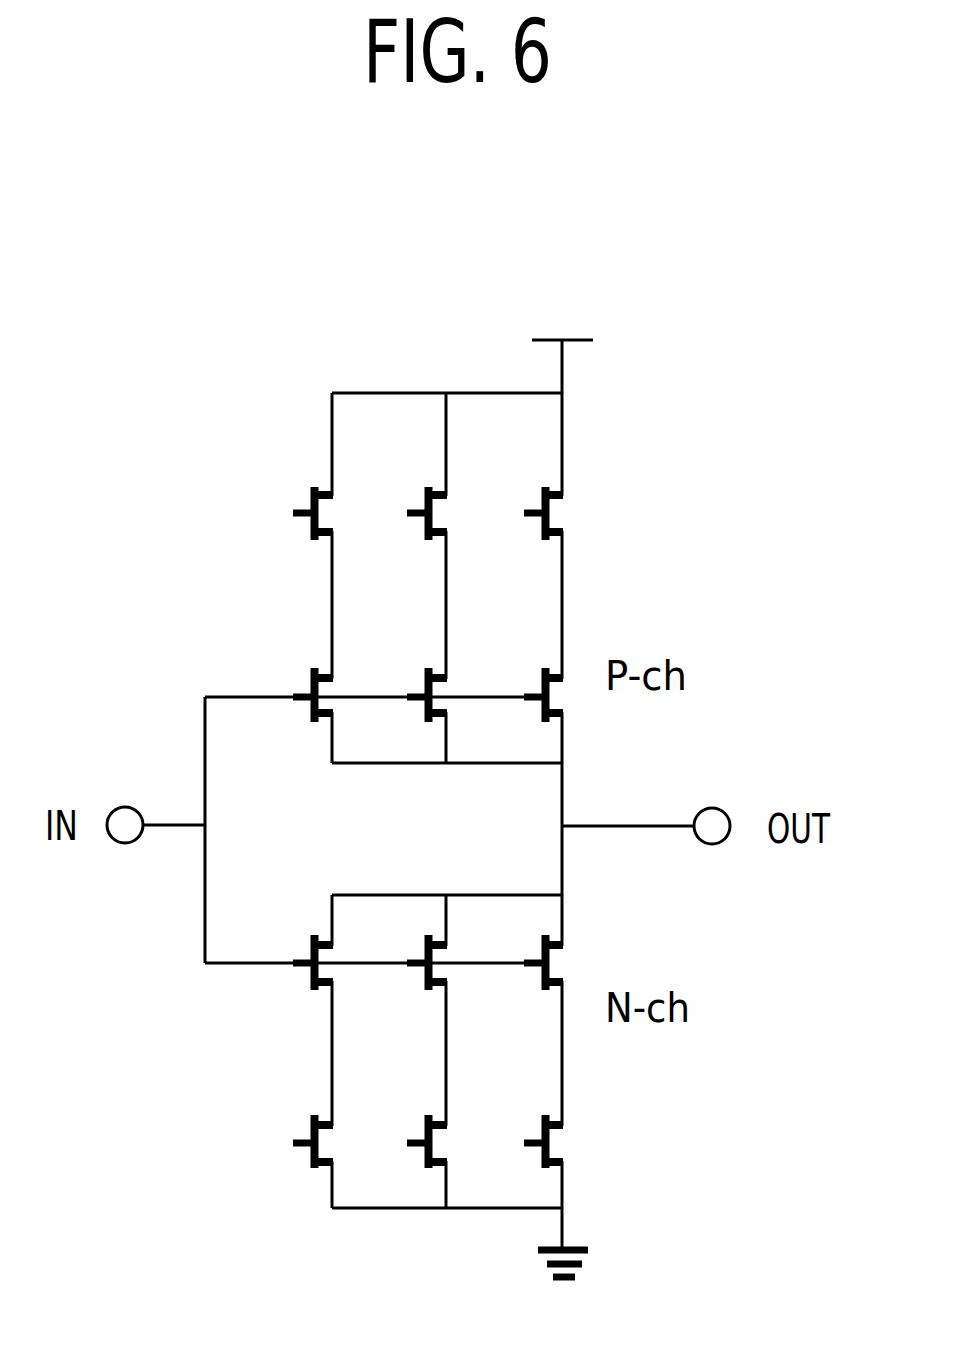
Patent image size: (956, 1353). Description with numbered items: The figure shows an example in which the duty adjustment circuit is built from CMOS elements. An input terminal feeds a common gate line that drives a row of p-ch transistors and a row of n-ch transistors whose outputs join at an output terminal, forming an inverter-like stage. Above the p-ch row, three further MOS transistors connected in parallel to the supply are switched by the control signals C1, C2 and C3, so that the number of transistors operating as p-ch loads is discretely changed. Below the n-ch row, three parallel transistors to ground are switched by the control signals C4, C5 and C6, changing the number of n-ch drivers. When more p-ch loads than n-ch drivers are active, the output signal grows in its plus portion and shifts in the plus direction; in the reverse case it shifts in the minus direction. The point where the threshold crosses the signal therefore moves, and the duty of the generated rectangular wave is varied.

The control signal C1 is at (296, 488).
The control signal C2 is at (408, 488).
The control signal C3 is at (523, 488).
The control signal C4 is at (297, 1115).
The control signal C5 is at (411, 1115).
The control signal C6 is at (525, 1115).